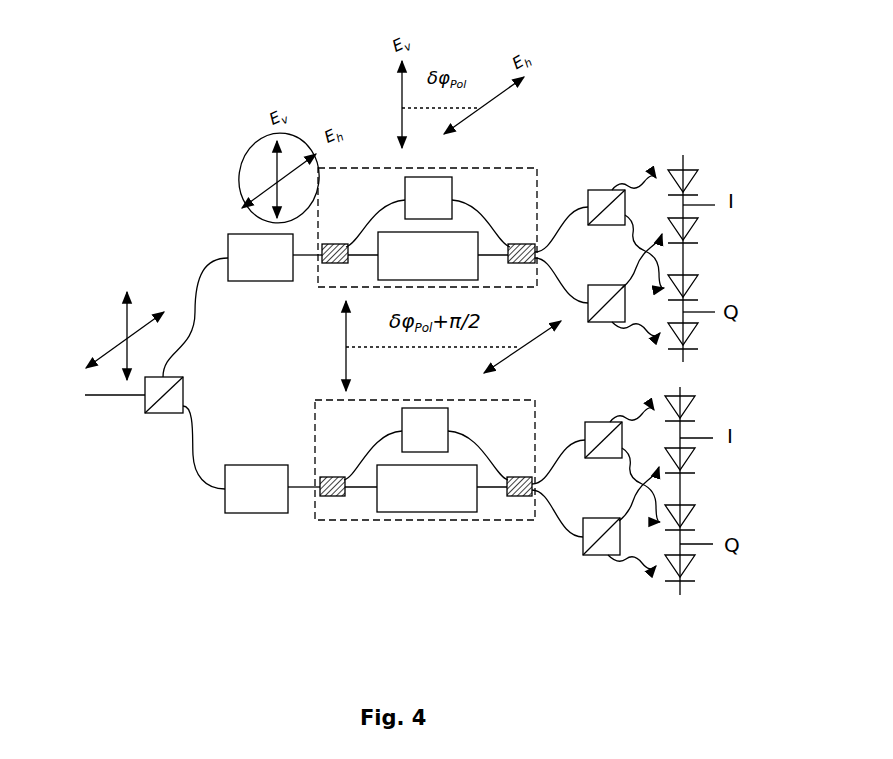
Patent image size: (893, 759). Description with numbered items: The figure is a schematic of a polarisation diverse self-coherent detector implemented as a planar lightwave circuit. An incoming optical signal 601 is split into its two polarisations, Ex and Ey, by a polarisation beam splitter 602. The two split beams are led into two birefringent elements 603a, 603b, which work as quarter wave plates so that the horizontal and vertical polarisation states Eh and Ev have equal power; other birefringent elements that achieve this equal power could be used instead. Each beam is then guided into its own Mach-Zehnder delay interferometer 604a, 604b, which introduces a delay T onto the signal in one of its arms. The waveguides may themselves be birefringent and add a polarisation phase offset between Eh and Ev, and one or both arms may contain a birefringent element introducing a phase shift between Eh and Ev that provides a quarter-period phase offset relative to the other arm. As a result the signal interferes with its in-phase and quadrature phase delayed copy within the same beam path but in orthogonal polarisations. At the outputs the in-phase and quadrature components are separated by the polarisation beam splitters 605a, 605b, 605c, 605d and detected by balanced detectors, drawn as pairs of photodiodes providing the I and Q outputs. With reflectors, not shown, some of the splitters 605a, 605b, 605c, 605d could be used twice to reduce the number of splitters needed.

The optical signal 601 is at (98, 329).
The polarisation beam splitter 602 is at (139, 431).
The birefringent element 603a is at (260, 274).
The birefringent element 603b is at (258, 505).
The Mach-Zehnder delay interferometer 604a is at (415, 227).
The Mach-Zehnder delay interferometer 604b is at (411, 460).
The polarisation beam splitter 605a is at (618, 218).
The polarisation beam splitter 605b is at (617, 285).
The polarisation beam splitter 605c is at (614, 438).
The polarisation beam splitter 605d is at (614, 518).